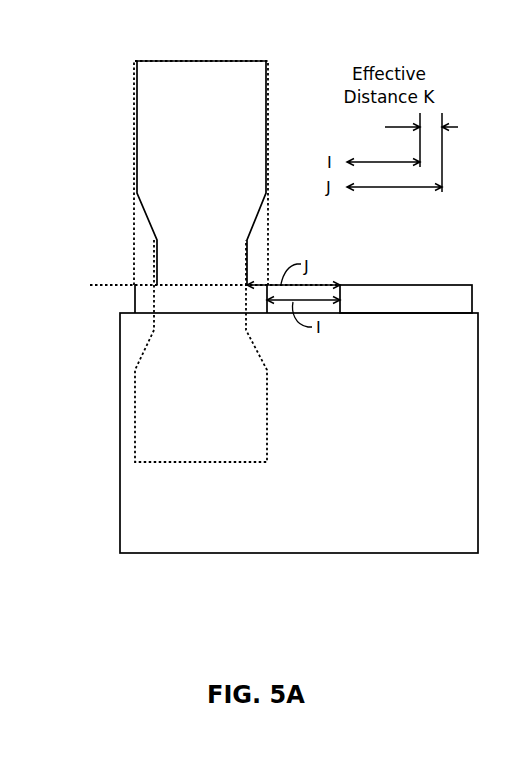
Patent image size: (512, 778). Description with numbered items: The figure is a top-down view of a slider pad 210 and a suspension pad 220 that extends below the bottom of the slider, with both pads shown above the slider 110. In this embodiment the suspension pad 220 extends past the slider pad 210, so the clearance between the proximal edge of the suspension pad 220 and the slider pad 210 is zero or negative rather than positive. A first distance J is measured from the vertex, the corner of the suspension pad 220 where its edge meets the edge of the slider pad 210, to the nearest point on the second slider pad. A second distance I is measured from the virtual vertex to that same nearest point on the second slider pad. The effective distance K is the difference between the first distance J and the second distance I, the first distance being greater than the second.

The substrate 110 is at (193, 553).
The slider pad 210 is at (135, 303).
The suspension pad 220 is at (193, 61).